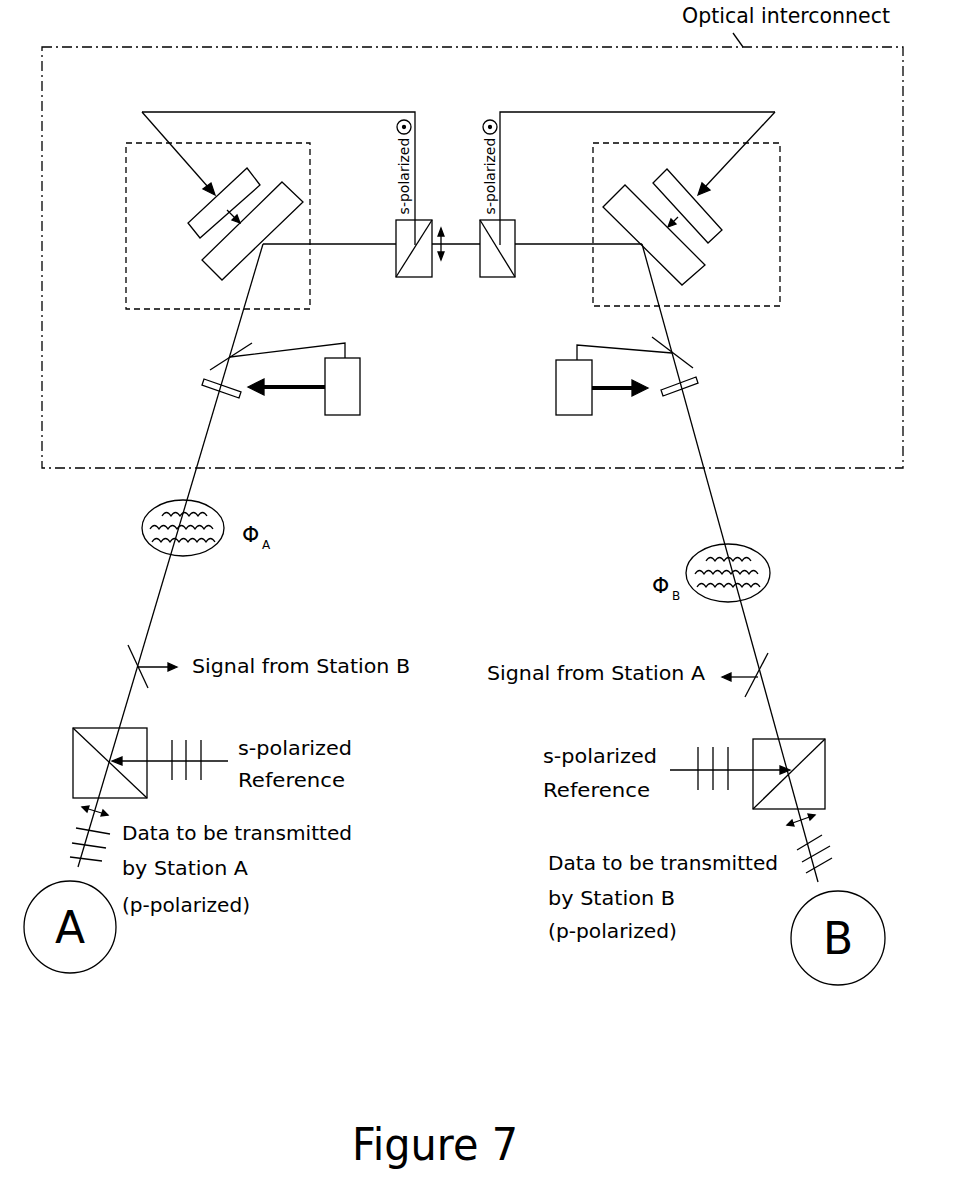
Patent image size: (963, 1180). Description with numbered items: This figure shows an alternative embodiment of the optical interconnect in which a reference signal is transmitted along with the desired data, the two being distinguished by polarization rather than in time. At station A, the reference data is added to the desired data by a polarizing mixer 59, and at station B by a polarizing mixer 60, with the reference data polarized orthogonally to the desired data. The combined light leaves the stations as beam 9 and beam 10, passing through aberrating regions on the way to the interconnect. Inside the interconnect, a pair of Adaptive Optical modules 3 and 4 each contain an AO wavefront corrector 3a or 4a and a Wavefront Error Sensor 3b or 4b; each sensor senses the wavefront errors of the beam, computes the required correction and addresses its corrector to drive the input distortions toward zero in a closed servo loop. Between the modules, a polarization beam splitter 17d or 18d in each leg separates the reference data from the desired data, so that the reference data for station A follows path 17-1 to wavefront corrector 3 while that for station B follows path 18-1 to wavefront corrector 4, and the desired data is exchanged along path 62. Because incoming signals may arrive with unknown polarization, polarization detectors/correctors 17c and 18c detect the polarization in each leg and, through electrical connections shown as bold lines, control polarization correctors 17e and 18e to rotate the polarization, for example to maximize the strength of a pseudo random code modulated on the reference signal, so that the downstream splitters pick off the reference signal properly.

The path 17-1 is at (278, 166).
The path 18-1 is at (637, 166).
The Adaptive Optical module 3 is at (170, 309).
The AO wavefront corrector 3a is at (218, 263).
The Wavefront Error Sensor 3b is at (197, 223).
The Adaptive Optical module 4 is at (780, 253).
The AO wavefront corrector 4a is at (682, 273).
The Wavefront Error Sensor 4b is at (712, 228).
The polarization beam splitter 17d is at (428, 232).
The polarization beam splitter 18d is at (512, 253).
The path 62 is at (458, 250).
The polarization detector/corrector 17c is at (337, 392).
The polarization corrector 17e is at (212, 390).
The polarization detector/corrector 18c is at (573, 405).
The polarization corrector 18e is at (693, 385).
The beam 9 is at (162, 587).
The beam 10 is at (715, 518).
The polarizing mixer 59 is at (75, 772).
The polarizing mixer 60 is at (817, 770).